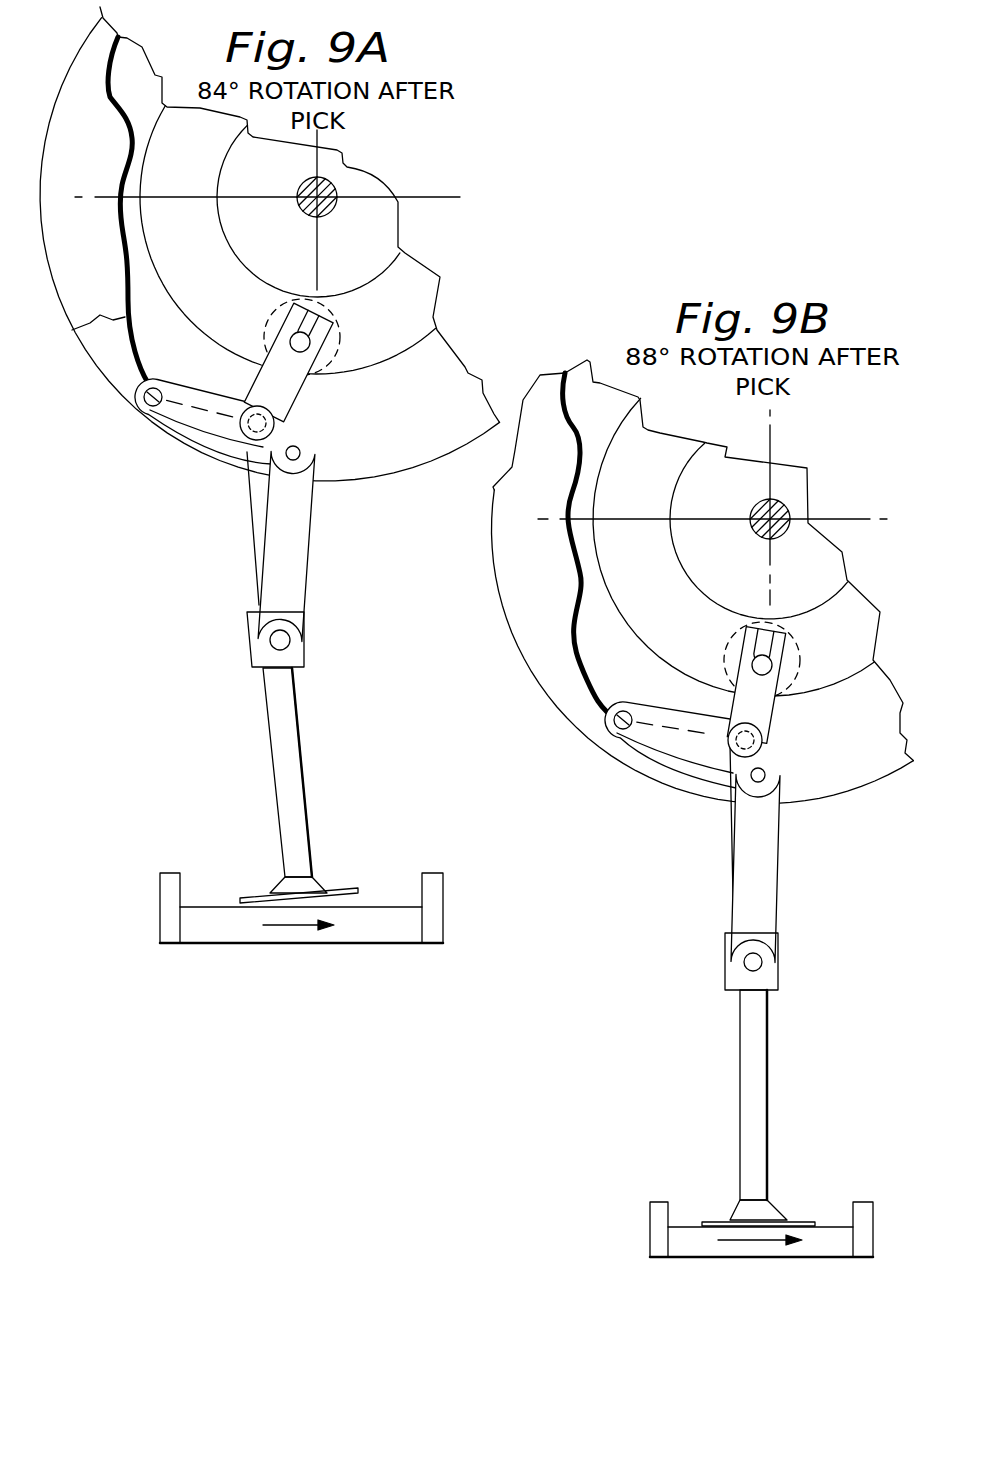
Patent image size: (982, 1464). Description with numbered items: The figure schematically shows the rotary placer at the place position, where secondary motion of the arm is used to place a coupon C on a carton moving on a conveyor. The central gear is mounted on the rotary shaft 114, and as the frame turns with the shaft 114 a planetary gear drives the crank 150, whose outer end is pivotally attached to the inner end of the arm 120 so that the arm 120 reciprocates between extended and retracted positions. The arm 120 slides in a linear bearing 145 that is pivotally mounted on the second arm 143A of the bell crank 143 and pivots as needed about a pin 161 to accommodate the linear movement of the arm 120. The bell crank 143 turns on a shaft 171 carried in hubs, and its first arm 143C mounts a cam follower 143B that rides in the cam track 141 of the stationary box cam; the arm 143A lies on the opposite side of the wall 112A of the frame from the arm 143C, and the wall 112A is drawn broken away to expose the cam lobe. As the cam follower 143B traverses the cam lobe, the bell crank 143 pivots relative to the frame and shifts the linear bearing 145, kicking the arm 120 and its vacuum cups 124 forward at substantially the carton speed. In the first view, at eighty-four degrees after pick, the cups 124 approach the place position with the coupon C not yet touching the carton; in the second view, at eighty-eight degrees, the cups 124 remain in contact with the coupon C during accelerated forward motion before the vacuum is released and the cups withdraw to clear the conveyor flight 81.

In FIG. 9A, the rotary shaft 114 is at (323, 210).
In FIG. 9B, the rotary shaft 114 is at (790, 500).
In FIG. 9A, the wall of frame 112A is at (463, 417).
In FIG. 9B, the wall of frame 112A is at (880, 753).
In FIG. 9A, the crank 150 is at (340, 338).
In FIG. 9B, the crank 150 is at (788, 643).
In FIG. 9A, the shaft of bell crank 171 is at (311, 444).
In FIG. 9B, the shaft of bell crank 171 is at (770, 770).
In FIG. 9A, the cam track 141 is at (110, 320).
In FIG. 9B, the cam track 141 is at (577, 603).
In FIG. 9A, the bell crank 143 is at (314, 576).
In FIG. 9B, the bell crank 143 is at (777, 887).
In FIG. 9A, the second arm of bell crank 143A is at (293, 547).
In FIG. 9B, the second arm of bell crank 143A is at (763, 848).
In FIG. 9A, the cam follower 143B is at (150, 412).
In FIG. 9B, the cam follower 143B is at (613, 727).
In FIG. 9A, the first arm of bell crank 143C is at (207, 440).
In FIG. 9B, the first arm of bell crank 143C is at (663, 757).
In FIG. 9A, the pin 161 is at (288, 640).
In FIG. 9B, the pin 161 is at (760, 955).
In FIG. 9A, the linear bearing 145 is at (304, 660).
In FIG. 9B, the linear bearing 145 is at (778, 980).
In FIG. 9A, the arm 120 is at (290, 730).
In FIG. 9B, the arm 120 is at (763, 1050).
In FIG. 9A, the vacuum cups 124 is at (313, 877).
In FIG. 9B, the vacuum cups 124 is at (777, 1213).
In FIG. 9A, the coupon C is at (345, 886).
In FIG. 9B, the coupon C is at (812, 1220).
In FIG. 9A, the conveyor flight 81 is at (441, 873).
In FIG. 9B, the conveyor flight 81 is at (865, 1213).